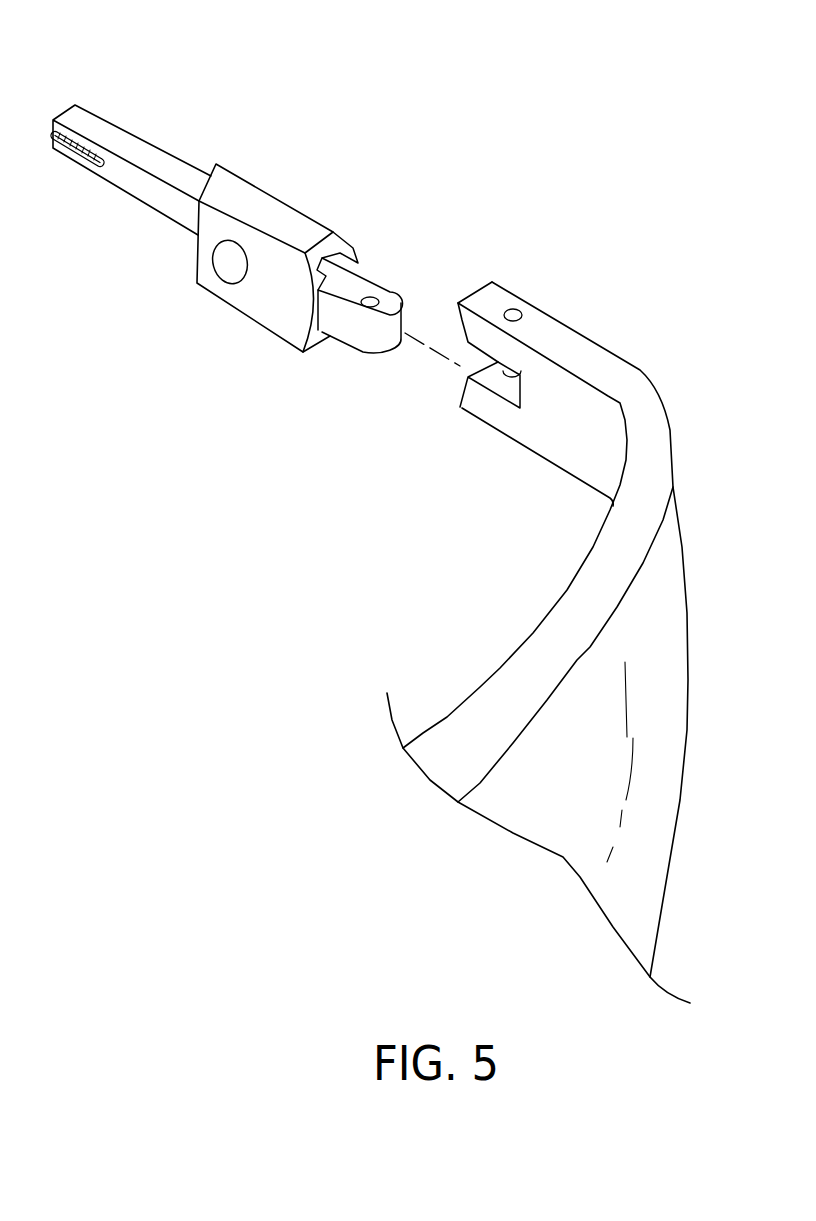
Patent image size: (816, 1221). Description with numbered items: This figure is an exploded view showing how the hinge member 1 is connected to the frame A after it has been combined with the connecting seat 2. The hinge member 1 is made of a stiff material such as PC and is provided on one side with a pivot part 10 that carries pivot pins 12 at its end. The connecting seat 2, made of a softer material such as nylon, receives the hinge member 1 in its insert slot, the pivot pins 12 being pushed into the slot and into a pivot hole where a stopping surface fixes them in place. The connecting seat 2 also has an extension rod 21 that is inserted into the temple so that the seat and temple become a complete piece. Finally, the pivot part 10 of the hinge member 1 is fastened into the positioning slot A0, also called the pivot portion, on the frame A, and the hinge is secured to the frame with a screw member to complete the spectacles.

The hinge member 1 is at (363, 339).
The connecting seat 2 is at (204, 206).
The pivot part 10 is at (380, 290).
The pivot pins 12 is at (235, 265).
The extension rod 21 is at (143, 158).
The frame A is at (504, 642).
The positioning slot A0 is at (490, 373).